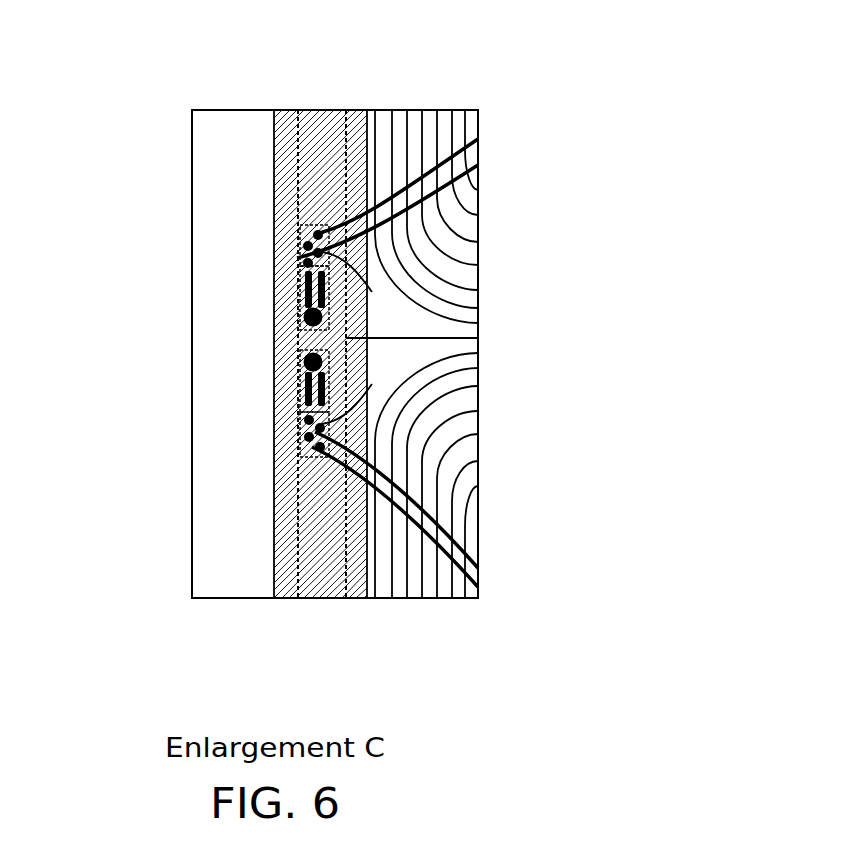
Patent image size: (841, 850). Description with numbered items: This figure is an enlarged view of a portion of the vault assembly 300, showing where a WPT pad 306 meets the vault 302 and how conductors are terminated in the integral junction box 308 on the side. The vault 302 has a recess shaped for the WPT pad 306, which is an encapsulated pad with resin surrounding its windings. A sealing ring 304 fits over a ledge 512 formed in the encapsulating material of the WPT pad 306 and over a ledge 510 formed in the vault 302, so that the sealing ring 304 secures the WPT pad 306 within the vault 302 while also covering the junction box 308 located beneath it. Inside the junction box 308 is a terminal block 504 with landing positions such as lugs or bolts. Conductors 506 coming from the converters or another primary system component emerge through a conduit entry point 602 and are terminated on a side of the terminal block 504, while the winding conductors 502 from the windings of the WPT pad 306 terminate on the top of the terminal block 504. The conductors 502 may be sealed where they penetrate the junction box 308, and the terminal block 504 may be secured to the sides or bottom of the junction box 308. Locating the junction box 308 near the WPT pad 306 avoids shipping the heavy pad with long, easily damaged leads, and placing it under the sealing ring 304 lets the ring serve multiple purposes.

The vault assembly 300 is at (151, 61).
The vault 302 is at (193, 542).
The sealing ring 304 is at (273, 188).
The WPT pad 306 is at (429, 118).
The junction box 308 is at (300, 278).
The winding conductors 502 is at (362, 300).
The terminal block 504 is at (302, 250).
The conductors 506 is at (300, 292).
The ledge 510 is at (288, 535).
The ledge 512 is at (354, 562).
The conduit entry point 602 is at (300, 365).